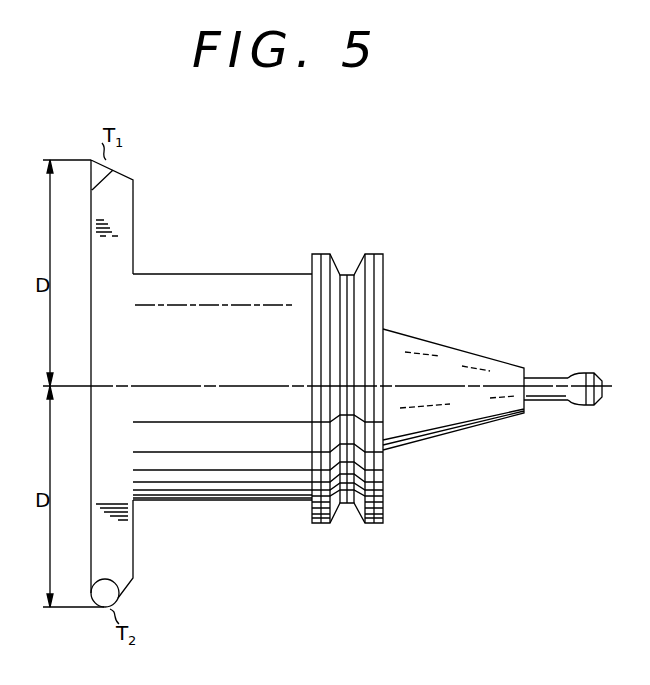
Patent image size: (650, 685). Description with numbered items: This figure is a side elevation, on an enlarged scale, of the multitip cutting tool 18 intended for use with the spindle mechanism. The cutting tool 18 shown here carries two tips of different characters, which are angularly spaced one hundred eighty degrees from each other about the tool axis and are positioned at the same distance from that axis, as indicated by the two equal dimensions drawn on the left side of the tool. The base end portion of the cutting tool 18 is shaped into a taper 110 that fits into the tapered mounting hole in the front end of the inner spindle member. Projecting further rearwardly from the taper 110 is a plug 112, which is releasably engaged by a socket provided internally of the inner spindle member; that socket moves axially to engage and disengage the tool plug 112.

The multitip cutting tool 18 is at (213, 238).
The taper 110 is at (438, 353).
The plug 112 is at (580, 372).